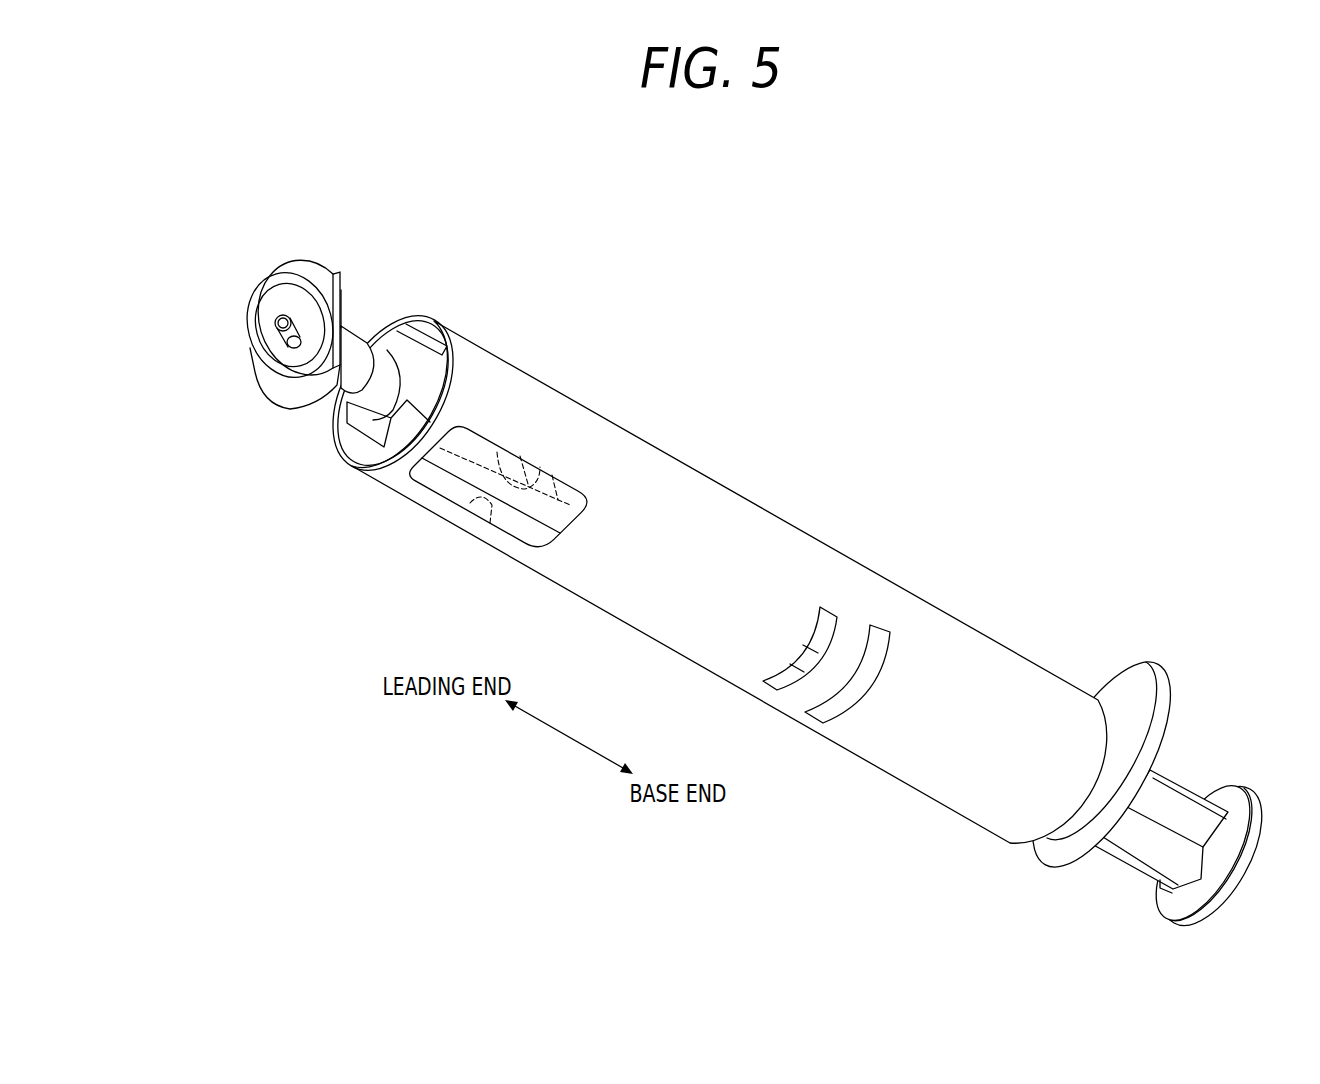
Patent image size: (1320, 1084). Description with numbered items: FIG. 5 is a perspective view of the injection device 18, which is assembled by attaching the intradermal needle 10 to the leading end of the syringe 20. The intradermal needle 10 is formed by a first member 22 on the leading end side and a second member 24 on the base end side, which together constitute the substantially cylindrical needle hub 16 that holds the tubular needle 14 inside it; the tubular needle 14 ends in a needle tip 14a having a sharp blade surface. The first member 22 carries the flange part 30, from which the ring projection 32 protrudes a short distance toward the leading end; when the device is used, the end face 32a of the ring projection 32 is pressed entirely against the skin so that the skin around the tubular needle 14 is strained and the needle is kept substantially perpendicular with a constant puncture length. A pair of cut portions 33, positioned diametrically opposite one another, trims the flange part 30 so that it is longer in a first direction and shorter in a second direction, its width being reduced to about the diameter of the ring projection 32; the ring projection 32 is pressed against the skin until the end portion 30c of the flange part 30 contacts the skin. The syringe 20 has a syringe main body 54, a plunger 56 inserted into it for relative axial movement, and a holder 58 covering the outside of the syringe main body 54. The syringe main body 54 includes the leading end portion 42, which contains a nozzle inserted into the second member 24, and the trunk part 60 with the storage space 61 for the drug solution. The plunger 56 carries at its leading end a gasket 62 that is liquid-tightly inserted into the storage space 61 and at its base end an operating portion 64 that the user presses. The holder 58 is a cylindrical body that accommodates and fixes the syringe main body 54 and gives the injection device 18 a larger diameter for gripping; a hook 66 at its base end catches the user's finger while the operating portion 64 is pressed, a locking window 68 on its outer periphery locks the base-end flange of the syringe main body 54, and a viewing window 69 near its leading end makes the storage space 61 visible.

The intradermal needle 10 is at (330, 241).
The tubular needle 14 is at (236, 299).
The needle tip 14a is at (283, 320).
The needle hub 16 is at (247, 490).
The injection device 18 is at (861, 312).
The syringe 20 is at (427, 362).
The first member 22 is at (265, 412).
The second member 24 is at (334, 402).
The flange part 30 is at (313, 272).
The end portion 30c is at (338, 270).
The ring projection 32 is at (258, 351).
The end face 32a is at (250, 320).
The cut portion 33 is at (346, 302).
The leading end portion 42 is at (376, 434).
The syringe main body 54 is at (430, 560).
The plunger 56 is at (1182, 765).
The holder 58 is at (757, 495).
The trunk part 60 is at (445, 467).
The storage space 61 is at (472, 440).
The gasket 62 is at (531, 548).
The operating portion 64 is at (1235, 890).
The hook 66 is at (1140, 662).
The locking window 68 is at (788, 687).
The viewing window 69 is at (488, 513).